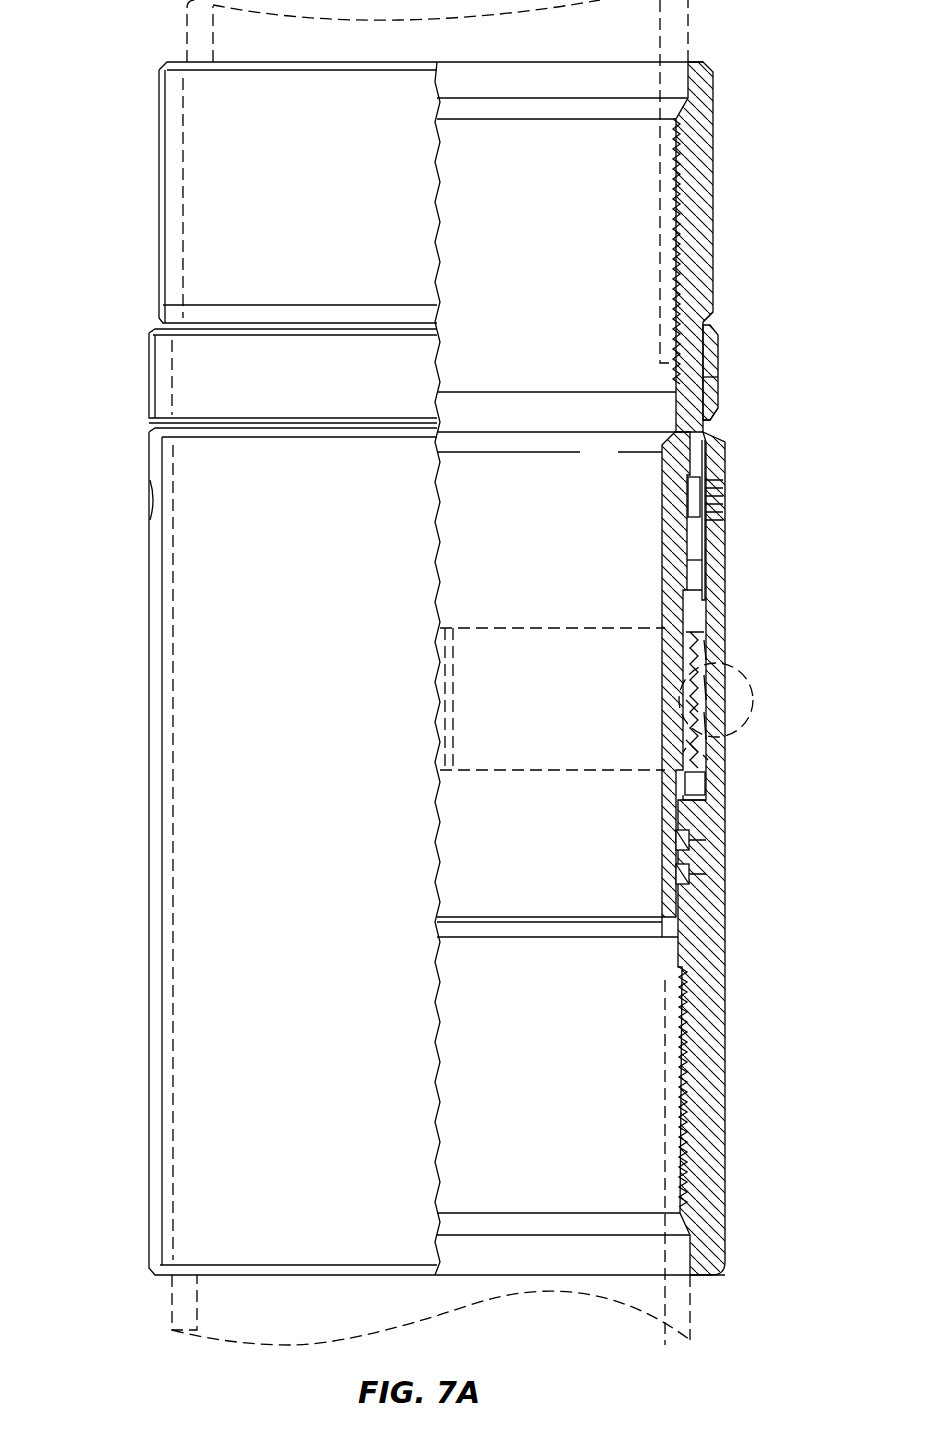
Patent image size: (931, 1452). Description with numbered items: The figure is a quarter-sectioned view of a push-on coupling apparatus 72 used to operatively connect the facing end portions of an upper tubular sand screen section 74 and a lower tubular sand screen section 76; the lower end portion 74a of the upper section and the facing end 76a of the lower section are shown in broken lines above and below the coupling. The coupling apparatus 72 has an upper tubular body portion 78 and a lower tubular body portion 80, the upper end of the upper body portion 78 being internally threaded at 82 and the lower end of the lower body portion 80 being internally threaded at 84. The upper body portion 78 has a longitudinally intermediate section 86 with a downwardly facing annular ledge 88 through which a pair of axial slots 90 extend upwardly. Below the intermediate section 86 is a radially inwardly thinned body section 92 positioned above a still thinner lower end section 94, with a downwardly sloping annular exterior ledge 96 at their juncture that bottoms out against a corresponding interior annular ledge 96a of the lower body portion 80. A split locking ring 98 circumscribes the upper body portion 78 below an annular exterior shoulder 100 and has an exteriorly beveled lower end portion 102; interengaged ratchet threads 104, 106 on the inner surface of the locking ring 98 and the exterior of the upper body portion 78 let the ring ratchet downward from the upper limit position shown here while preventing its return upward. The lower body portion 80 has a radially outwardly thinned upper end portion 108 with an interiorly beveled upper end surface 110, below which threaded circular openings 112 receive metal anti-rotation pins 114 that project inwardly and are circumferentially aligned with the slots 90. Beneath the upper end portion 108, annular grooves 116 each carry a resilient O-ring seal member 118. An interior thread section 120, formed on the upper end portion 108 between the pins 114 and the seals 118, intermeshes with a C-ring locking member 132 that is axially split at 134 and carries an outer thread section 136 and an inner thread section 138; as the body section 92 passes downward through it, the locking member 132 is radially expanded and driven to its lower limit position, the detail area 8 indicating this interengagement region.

The detail area 8 is at (748, 690).
The push-on coupling apparatus 72 is at (148, 618).
The upper tubular sand screen section 74 is at (187, 27).
The lower end portion of upper sand screen section 74a is at (658, 240).
The lower tubular sand screen section 76 is at (172, 1308).
The lower pipe pin end 76a is at (660, 1100).
The upper tubular body portion 78 is at (613, 247).
The lower tubular body portion 80 is at (619, 1101).
The internal threads 82 is at (676, 178).
The internal threads 84 is at (682, 1058).
The longitudinally intermediate section 86 is at (672, 515).
The annular ledge 88 is at (690, 602).
The axial slots 90 is at (697, 546).
The radially inwardly thinned body section 92 is at (672, 665).
The lower end section 94 is at (670, 858).
The annular exterior ledge 96 is at (710, 805).
The interior annular ledge 96a is at (690, 810).
The split locking ring 98 is at (718, 356).
The annular exterior shoulder 100 is at (705, 318).
The exteriorly beveled lower end portion 102 is at (706, 418).
The ratchet threads 104 is at (700, 400).
The ratchet threads 106 is at (705, 380).
The radially outwardly thinned upper end portion 108 is at (716, 574).
The interiorly beveled upper end surface 110 is at (670, 450).
The threaded circular openings 112 is at (712, 480).
The anti-rotation pins 114 is at (694, 497).
The annular grooves 116 is at (692, 870).
The O-ring seal member 118 is at (680, 840).
The interior side surface thread section 120 is at (690, 722).
The C-ring locking member 132 is at (556, 628).
The axial split 134 is at (455, 692).
The thread section 136 is at (704, 756).
The thread section 138 is at (686, 748).